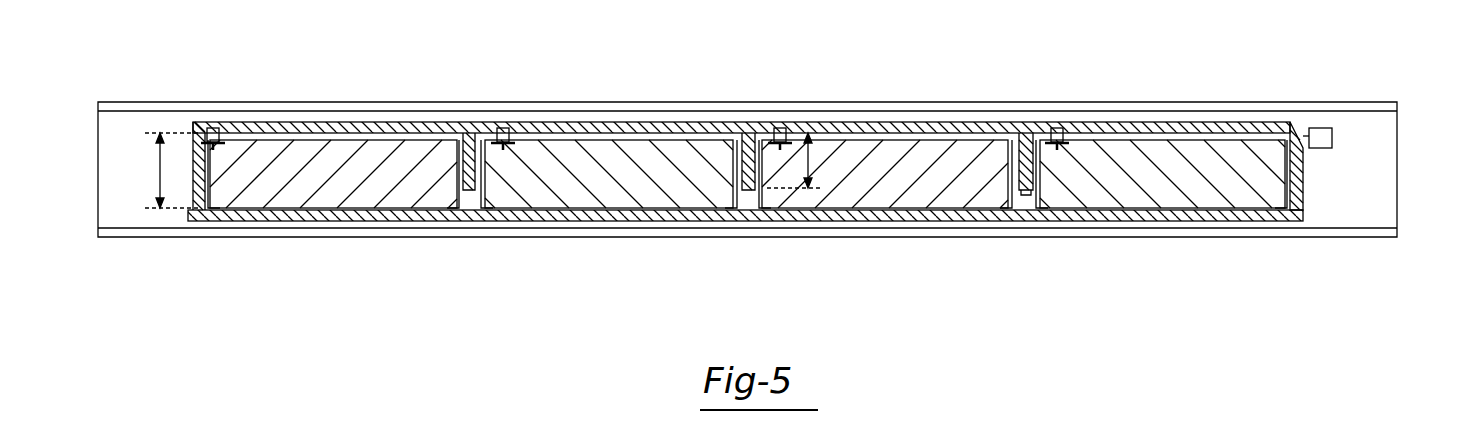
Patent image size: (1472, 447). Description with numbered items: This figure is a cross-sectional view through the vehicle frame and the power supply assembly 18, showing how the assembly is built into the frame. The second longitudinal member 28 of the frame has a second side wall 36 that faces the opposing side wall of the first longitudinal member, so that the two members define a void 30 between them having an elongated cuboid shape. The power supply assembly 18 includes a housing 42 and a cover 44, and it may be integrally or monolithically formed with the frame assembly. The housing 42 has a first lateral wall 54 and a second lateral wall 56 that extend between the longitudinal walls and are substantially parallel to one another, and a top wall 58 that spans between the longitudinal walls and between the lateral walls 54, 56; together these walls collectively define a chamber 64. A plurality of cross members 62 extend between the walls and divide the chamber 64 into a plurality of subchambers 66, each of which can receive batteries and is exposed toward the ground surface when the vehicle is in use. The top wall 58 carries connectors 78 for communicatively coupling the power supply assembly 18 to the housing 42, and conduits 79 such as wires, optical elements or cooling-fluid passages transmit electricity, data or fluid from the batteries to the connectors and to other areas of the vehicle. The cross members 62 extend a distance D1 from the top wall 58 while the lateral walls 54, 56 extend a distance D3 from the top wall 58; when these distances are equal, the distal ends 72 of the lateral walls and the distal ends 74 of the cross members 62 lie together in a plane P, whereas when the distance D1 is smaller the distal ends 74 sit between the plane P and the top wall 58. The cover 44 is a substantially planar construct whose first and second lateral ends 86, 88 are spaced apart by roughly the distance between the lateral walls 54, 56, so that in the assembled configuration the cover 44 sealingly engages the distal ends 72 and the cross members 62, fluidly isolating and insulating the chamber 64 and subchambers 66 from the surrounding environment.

The power supply assembly 18 is at (347, 213).
The second longitudinal member 28 is at (168, 222).
The void 30 is at (1355, 167).
The second side wall 36 is at (1357, 223).
The housing 42 is at (285, 128).
The cover 44 is at (575, 212).
The first lateral wall 54 is at (1305, 203).
The second lateral wall 56 is at (193, 150).
The top wall 58 is at (627, 134).
The cross members 62 is at (458, 186).
The chamber 64 is at (1025, 197).
The subchambers 66 is at (1090, 140).
The distal end 72 is at (1300, 215).
The distal end 74 is at (468, 196).
The connectors 78 is at (782, 128).
The conduits 79 is at (1320, 132).
The first lateral end 86 is at (1306, 216).
The second lateral end 88 is at (186, 214).
The distance D1 is at (812, 152).
The distance D3 is at (158, 168).
The plane P is at (157, 212).